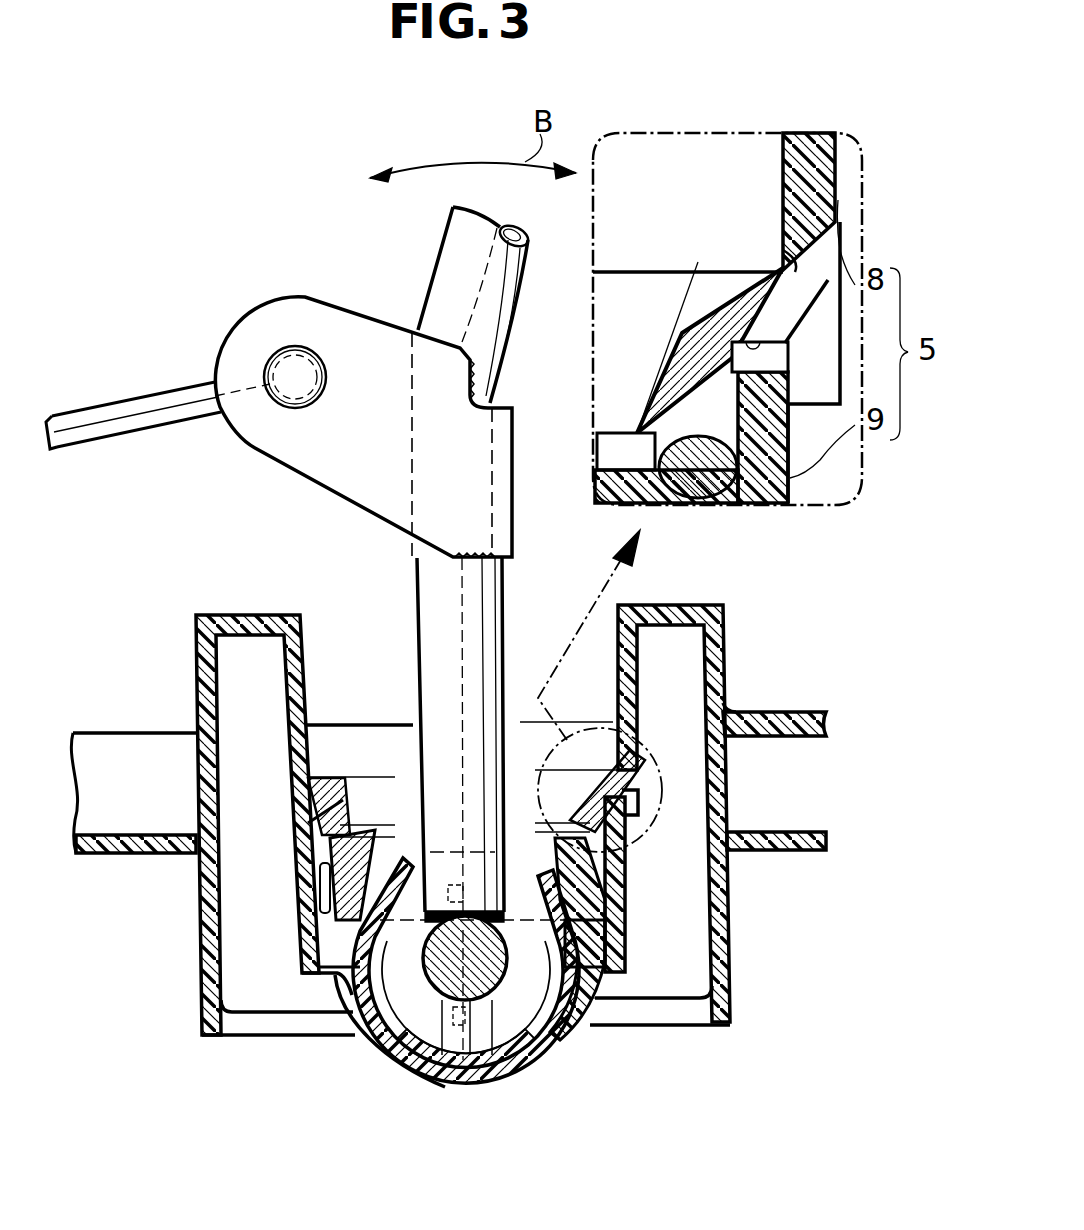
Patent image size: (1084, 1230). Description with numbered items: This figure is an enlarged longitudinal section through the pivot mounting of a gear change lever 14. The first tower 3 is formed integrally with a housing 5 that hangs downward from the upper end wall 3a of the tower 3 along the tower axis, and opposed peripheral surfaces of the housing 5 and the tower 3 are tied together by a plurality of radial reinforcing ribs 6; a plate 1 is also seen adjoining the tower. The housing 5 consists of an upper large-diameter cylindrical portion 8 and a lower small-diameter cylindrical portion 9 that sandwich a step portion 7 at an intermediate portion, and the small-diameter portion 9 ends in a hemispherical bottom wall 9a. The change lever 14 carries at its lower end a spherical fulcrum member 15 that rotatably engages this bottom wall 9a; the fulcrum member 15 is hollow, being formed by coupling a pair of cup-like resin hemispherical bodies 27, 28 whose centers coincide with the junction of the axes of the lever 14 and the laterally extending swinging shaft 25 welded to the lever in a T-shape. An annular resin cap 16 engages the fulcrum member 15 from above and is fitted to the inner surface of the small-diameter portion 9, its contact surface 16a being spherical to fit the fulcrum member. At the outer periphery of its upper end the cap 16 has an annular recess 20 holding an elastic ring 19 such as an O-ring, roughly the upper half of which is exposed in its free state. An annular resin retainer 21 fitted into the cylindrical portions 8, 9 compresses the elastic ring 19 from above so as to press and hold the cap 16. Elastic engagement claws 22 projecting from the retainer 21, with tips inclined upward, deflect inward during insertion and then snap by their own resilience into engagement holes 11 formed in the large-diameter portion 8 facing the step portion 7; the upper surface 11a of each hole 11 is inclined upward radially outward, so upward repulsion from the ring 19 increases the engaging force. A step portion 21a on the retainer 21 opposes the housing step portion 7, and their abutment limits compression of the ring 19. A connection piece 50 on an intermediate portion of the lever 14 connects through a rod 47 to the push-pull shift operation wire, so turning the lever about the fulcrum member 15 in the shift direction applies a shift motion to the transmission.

The plate 1 is at (783, 708).
The first tower 3 is at (728, 948).
The upper end wall 3a is at (662, 605).
The housing 5 is at (448, 881).
The radial reinforcing ribs 6 is at (258, 1000).
The step portion 7 is at (312, 885).
The large-diameter cylindrical portion 8 is at (290, 722).
The small-diameter cylindrical portion 9 is at (320, 905).
The hemispherical bottom wall 9a is at (373, 1051).
The engagement holes 11 is at (640, 800).
The upper surface of the engagement hole 11a is at (632, 768).
The change lever 14 is at (513, 317).
The spherical fulcrum member 15 is at (440, 1017).
The annular cap 16 is at (625, 883).
The surface of the cap 16a is at (626, 942).
The elastic ring 19 is at (355, 790).
The annular recess 20 is at (331, 870).
The annular retainer 21 is at (578, 800).
The step portion 21a is at (308, 822).
The elastic engagement claws 22 is at (640, 785).
The swinging shaft 25 is at (445, 965).
The hemispherical body 27 is at (417, 1063).
The hemispherical body 28 is at (512, 1073).
The rod 47 is at (125, 400).
The connection piece 50 is at (300, 318).